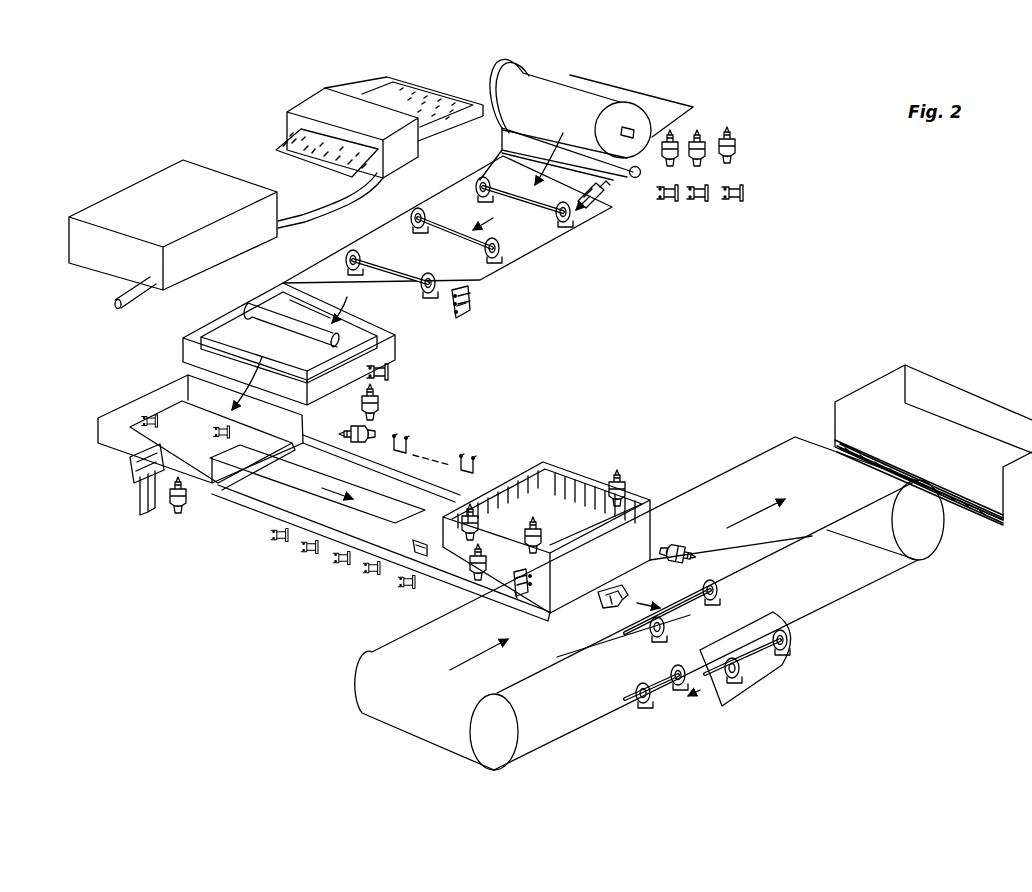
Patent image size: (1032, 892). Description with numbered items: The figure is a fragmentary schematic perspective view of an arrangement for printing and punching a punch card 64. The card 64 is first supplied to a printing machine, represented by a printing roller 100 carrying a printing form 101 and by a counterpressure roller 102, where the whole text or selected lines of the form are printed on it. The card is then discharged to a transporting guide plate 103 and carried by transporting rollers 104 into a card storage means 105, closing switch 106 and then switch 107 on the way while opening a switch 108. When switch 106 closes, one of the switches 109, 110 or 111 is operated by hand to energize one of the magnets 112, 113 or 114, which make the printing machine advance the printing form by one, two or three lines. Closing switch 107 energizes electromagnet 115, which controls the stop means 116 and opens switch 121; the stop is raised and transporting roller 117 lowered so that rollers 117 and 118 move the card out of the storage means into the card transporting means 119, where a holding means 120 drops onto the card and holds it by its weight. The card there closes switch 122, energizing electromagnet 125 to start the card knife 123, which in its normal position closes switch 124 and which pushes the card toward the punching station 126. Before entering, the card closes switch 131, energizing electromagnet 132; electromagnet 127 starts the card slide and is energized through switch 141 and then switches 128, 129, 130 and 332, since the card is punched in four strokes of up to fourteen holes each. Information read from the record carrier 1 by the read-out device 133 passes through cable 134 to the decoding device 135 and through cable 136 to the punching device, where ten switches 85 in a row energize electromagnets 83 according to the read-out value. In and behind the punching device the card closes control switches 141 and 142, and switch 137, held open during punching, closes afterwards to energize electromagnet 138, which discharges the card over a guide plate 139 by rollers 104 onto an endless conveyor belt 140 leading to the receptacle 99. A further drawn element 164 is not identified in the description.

The record carrier 1 is at (388, 84).
The punch card 64 is at (655, 102).
The electromagnets 83 is at (625, 495).
The switches 85 is at (478, 465).
The receptacle 99 is at (975, 410).
The printing roller 100 is at (637, 129).
The printing form 101 is at (570, 102).
The counterpressure roller 102 is at (635, 178).
The transporting guide plate 103 is at (457, 208).
The transporting rollers 104 is at (470, 183).
The card storage means 105 is at (298, 315).
The switch 106 is at (602, 207).
The switch 107 is at (472, 296).
The switch 108 is at (470, 312).
The switch 109 is at (748, 197).
The switch 110 is at (713, 200).
The switch 111 is at (676, 200).
The magnet 112 is at (737, 150).
The magnet 113 is at (705, 166).
The magnet 114 is at (676, 168).
The electromagnet 115 is at (381, 403).
The stop means 116 is at (183, 340).
The transporting roller 117 is at (256, 310).
The transporting roller 118 is at (247, 337).
The card transporting means 119 is at (233, 492).
The holding means 120 is at (160, 458).
The switch 121 is at (390, 370).
The switch 122 is at (226, 438).
The card knife 123 is at (130, 452).
The switch 124 is at (187, 412).
The electromagnet 125 is at (178, 517).
The punching station 126 is at (645, 510).
The electromagnet 127 is at (378, 432).
The switch 128 is at (310, 557).
The switch 129 is at (342, 568).
The switch 130 is at (372, 578).
The switch 131 is at (421, 557).
The electromagnet 132 is at (476, 582).
The read-out device 133 is at (318, 106).
The cable 134 is at (335, 197).
The decoding device 135 is at (158, 180).
The cable 136 is at (113, 296).
The switch 137 is at (405, 591).
The electromagnet 138 is at (680, 550).
The guide plate 139 is at (773, 667).
The endless conveyor belt 140 is at (385, 692).
The control switch 141 is at (513, 597).
The control switch 142 is at (618, 592).
The pin 164 is at (527, 600).
The switch 332 is at (279, 545).